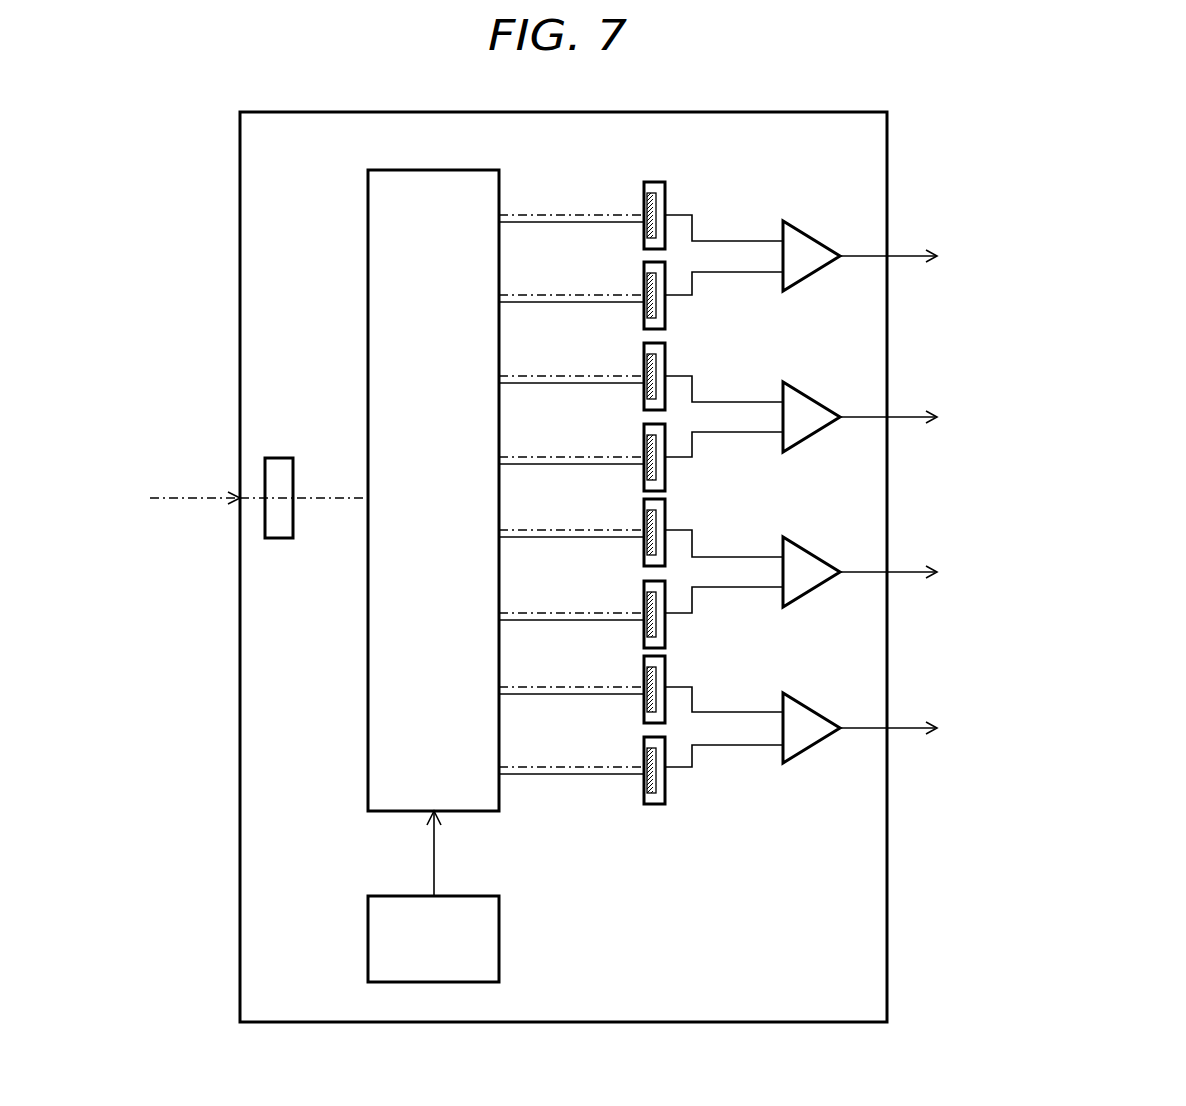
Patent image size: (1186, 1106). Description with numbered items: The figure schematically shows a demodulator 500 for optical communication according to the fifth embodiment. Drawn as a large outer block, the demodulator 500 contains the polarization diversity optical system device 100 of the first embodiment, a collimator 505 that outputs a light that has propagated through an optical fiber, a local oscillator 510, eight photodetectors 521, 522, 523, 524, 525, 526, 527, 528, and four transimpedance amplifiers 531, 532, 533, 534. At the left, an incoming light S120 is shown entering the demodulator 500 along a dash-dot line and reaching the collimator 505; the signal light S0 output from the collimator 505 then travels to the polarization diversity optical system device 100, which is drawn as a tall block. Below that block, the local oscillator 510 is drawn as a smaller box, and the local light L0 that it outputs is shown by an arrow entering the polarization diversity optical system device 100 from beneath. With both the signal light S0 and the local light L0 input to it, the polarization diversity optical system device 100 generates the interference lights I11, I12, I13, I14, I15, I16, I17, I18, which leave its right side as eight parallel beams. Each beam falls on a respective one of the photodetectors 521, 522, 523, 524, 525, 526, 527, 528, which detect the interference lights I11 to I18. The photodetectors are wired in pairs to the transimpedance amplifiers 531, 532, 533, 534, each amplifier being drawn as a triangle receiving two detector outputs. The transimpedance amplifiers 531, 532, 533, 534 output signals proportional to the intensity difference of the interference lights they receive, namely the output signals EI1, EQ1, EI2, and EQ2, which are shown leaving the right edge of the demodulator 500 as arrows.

The demodulator 500 is at (337, 112).
The polarization diversity optical system device 100 is at (451, 501).
The collimator 505 is at (279, 538).
The local oscillator 510 is at (499, 934).
The photodetector 521 is at (665, 192).
The photodetector 522 is at (665, 320).
The photodetector 523 is at (665, 352).
The photodetector 524 is at (665, 472).
The photodetector 525 is at (665, 508).
The photodetector 526 is at (665, 628).
The photodetector 527 is at (665, 663).
The photodetector 528 is at (665, 786).
The transimpedance amplifier 531 is at (808, 236).
The transimpedance amplifier 532 is at (808, 397).
The transimpedance amplifier 533 is at (808, 552).
The transimpedance amplifier 534 is at (808, 708).
The local light L0 is at (434, 858).
The signal light S0 is at (325, 492).
The input signal light S120 is at (185, 492).
The interference light I11 is at (548, 211).
The interference light I12 is at (548, 291).
The interference light I13 is at (548, 372).
The interference light I14 is at (548, 453).
The interference light I15 is at (548, 526).
The interference light I16 is at (548, 609).
The interference light I17 is at (548, 683).
The interference light I18 is at (548, 763).
The output signal EI1 is at (913, 253).
The output signal EQ1 is at (913, 414).
The output signal EI2 is at (913, 569).
The output signal EQ2 is at (913, 725).